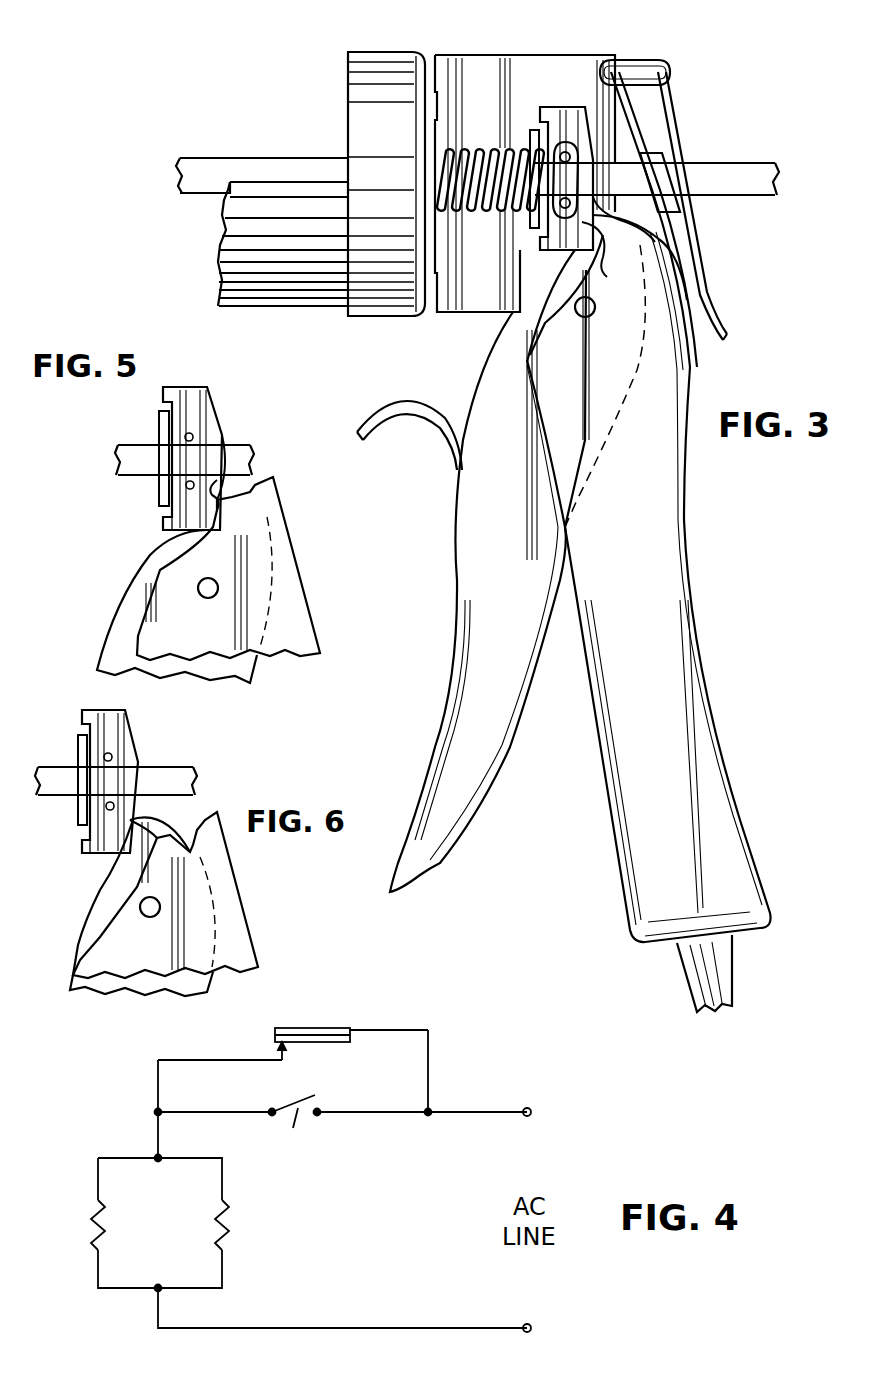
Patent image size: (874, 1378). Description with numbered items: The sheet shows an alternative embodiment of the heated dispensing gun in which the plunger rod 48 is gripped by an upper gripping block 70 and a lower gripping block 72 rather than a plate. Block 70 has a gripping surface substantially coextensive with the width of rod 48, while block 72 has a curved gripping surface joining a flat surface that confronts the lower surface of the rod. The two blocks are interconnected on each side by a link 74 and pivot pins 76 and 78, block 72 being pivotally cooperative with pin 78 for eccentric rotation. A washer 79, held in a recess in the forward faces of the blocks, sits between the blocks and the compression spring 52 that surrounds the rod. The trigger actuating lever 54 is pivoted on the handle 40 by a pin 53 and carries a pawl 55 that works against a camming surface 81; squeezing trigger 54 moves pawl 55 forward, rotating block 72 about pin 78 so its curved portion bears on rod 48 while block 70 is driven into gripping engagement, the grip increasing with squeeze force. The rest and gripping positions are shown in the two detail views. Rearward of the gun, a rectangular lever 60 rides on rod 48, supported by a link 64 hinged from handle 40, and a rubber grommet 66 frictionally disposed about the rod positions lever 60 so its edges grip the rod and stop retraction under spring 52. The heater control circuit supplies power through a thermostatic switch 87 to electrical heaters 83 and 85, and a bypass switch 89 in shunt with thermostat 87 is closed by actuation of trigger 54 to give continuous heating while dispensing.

In FIG. 3, the handle 40 is at (660, 640).
In FIG. 5, the handle 40 is at (300, 607).
In FIG. 6, the handle 40 is at (233, 890).
In FIG. 3, the connecting rod 48 is at (713, 175).
In FIG. 5, the connecting rod 48 is at (229, 453).
In FIG. 6, the connecting rod 48 is at (160, 774).
In FIG. 3, the compression spring 52 is at (500, 206).
In FIG. 3, the pin 53 is at (592, 315).
In FIG. 5, the pin 53 is at (216, 588).
In FIG. 6, the pin 53 is at (150, 917).
In FIG. 3, the trigger actuating lever 54 is at (480, 688).
In FIG. 5, the trigger actuating lever 54 is at (118, 648).
In FIG. 6, the trigger actuating lever 54 is at (103, 906).
In FIG. 3, the pawl 55 is at (597, 210).
In FIG. 5, the pawl 55 is at (235, 517).
In FIG. 6, the pawl 55 is at (157, 838).
In FIG. 3, the lever 60 is at (709, 313).
In FIG. 3, the link 64 is at (638, 58).
In FIG. 3, the rubber grommet 66 is at (652, 165).
In FIG. 3, the upper gripping block 70 is at (547, 108).
In FIG. 5, the upper gripping block 70 is at (190, 362).
In FIG. 6, the upper gripping block 70 is at (88, 710).
In FIG. 3, the lower gripping block 72 is at (548, 249).
In FIG. 5, the lower gripping block 72 is at (168, 520).
In FIG. 6, the lower gripping block 72 is at (98, 836).
In FIG. 3, the link 74 is at (560, 168).
In FIG. 3, the pivot pin 76 is at (566, 152).
In FIG. 5, the pivot pin 76 is at (189, 461).
In FIG. 6, the pivot pin 76 is at (109, 781).
In FIG. 3, the pivot pin 78 is at (578, 272).
In FIG. 3, the washer 79 is at (534, 229).
In FIG. 5, the washer 79 is at (161, 428).
In FIG. 6, the washer 79 is at (80, 750).
In FIG. 3, the camming surface 81 is at (645, 247).
In FIG. 5, the camming surface 81 is at (213, 492).
In FIG. 6, the camming surface 81 is at (140, 812).
In FIG. 4, the electrical heater 83 is at (88, 1235).
In FIG. 4, the electrical heater 85 is at (232, 1218).
In FIG. 4, the thermostatic switch 87 is at (325, 1026).
In FIG. 4, the bypass switch 89 is at (295, 1130).